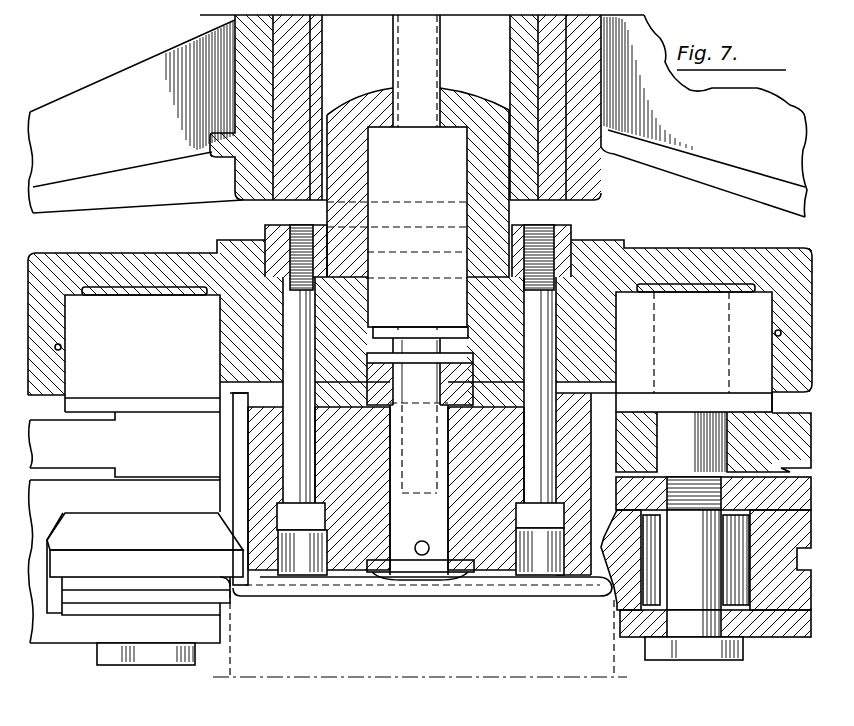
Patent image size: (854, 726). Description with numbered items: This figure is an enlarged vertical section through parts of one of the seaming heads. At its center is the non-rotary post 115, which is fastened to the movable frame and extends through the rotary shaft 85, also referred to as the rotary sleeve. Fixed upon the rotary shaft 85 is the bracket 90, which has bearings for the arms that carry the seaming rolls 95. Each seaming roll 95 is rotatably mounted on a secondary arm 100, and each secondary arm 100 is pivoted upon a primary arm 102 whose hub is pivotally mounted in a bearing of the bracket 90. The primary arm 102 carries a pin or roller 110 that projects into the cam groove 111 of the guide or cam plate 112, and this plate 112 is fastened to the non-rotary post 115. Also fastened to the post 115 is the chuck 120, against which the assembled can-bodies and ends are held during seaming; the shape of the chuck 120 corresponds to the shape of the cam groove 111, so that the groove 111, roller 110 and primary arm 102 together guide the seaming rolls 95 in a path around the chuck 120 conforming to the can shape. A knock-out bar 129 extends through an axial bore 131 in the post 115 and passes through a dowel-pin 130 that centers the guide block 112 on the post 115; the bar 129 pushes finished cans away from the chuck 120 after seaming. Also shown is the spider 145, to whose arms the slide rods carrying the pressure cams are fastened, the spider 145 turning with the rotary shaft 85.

The rotary shaft 85 is at (292, 30).
The bracket 90 is at (256, 78).
The seaming rolls 95 is at (619, 604).
The secondary arm 100 is at (55, 637).
The primary arm 102 is at (802, 433).
The pin or roller 110 is at (703, 236).
The cam groove 111 is at (63, 347).
The guide or cam plate 112 is at (117, 265).
The non-rotary post 115 is at (441, 172).
The chuck 120 is at (347, 574).
The knock-out bar 129 is at (417, 114).
The dowel-pin 130 is at (453, 217).
The axial bore 131 is at (398, 106).
The spider 145 is at (658, 116).